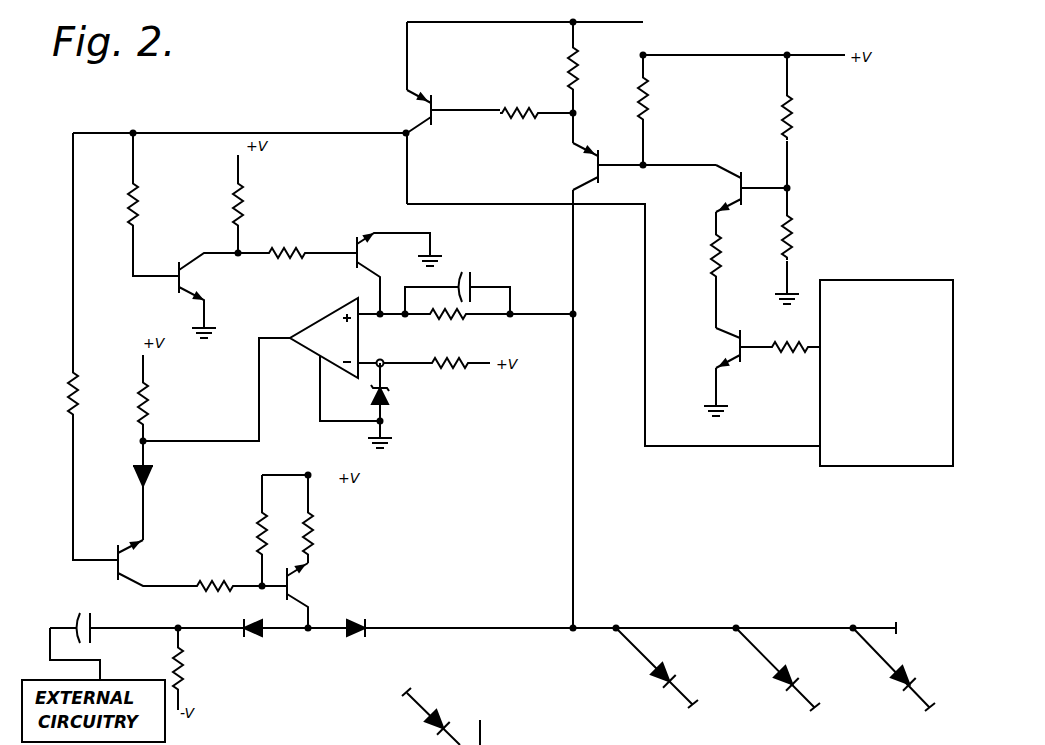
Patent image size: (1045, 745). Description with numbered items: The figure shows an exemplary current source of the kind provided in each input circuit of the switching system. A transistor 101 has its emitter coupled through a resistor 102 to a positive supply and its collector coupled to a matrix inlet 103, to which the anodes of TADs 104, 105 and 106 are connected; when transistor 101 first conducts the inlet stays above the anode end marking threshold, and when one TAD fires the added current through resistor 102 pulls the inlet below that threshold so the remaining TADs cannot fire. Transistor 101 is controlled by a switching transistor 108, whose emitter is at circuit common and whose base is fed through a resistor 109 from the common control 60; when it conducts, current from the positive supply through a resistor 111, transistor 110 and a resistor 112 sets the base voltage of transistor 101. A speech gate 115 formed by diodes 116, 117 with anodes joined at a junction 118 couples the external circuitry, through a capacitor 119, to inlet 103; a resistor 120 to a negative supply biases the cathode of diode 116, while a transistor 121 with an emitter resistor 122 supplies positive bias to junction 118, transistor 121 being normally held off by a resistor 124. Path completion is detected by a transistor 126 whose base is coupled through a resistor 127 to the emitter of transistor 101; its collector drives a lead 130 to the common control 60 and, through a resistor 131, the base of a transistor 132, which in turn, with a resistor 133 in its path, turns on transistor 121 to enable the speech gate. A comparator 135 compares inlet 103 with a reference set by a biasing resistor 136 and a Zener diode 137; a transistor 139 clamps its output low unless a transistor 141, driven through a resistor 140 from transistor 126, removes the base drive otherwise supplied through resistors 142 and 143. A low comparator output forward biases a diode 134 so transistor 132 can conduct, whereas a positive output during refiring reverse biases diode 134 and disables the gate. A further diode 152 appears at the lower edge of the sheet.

The common control 60 is at (820, 468).
The transistor 101 is at (607, 178).
The resistor 102 is at (571, 63).
The matrix inlet 103 is at (592, 628).
The TAD 104 is at (652, 678).
The TAD 105 is at (773, 680).
The TAD 106 is at (890, 682).
The switching transistor 108 is at (724, 350).
The resistor 109 is at (778, 358).
The transistor 110 is at (743, 170).
The resistor 111 is at (648, 102).
The resistor 112 is at (713, 262).
The speech gate 115 is at (322, 606).
The diode 116 is at (252, 640).
The diode 117 is at (354, 640).
The junction 118 is at (306, 640).
The capacitor 119 is at (95, 624).
The resistor 120 is at (174, 668).
The transistor 121 is at (280, 588).
The resistor 122 is at (312, 538).
The resistor 124 is at (258, 530).
The transistor 126 is at (437, 100).
The resistor 127 is at (515, 125).
The lead 130 is at (410, 165).
The resistor 131 is at (80, 380).
The transistor 132 is at (112, 567).
The resistor 133 is at (228, 553).
The diode 134 is at (150, 484).
The comparator 135 is at (322, 355).
The biasing resistor 136 is at (442, 326).
The Zener diode 137 is at (392, 392).
The transistor 139 is at (366, 236).
The resistor 140 is at (137, 210).
The transistor 141 is at (173, 288).
The resistor 142 is at (243, 210).
The resistor 143 is at (285, 262).
The diode 152 is at (427, 726).